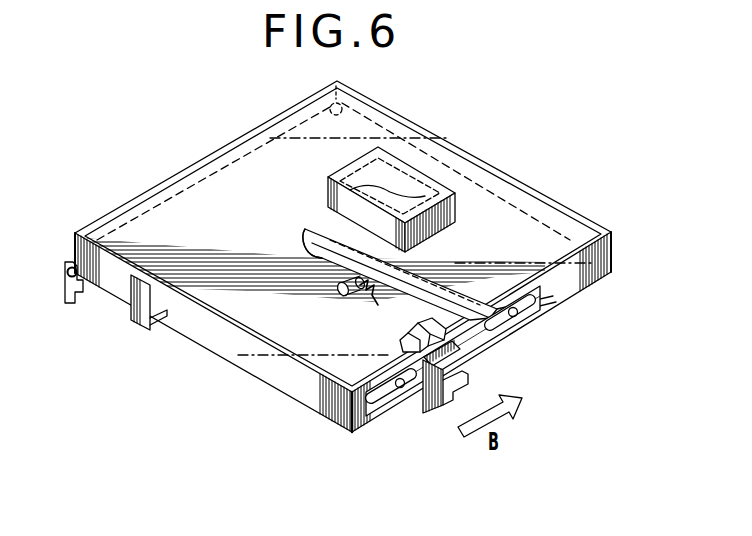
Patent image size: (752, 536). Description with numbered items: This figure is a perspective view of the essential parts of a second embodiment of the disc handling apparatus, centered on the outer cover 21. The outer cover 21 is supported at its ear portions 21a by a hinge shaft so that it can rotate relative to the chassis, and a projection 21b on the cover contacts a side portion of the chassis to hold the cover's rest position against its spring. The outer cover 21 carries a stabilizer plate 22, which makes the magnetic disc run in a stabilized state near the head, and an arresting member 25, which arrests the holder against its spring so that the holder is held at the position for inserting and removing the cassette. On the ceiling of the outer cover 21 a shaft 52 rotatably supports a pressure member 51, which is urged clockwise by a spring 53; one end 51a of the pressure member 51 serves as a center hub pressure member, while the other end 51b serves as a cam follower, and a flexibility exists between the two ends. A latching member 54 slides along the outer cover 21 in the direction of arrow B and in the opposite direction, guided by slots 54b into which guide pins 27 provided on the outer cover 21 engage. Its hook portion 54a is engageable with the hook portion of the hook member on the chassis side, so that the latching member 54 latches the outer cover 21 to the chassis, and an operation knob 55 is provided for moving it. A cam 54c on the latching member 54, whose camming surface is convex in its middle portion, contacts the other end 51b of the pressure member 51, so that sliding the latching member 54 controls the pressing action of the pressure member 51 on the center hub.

The outer cover 21 is at (508, 193).
The ear portions 21a is at (344, 103).
The projection 21b is at (70, 304).
The stabilizer plate 22 is at (415, 178).
The arresting member 25 is at (137, 322).
The guide pins 27 is at (396, 375).
The pressure member 51 is at (415, 278).
The one end of pressure member 51a is at (300, 243).
The other end of pressure member 51b is at (500, 340).
The shaft 52 is at (340, 290).
The spring 53 is at (374, 305).
The latching member 54 is at (478, 343).
The hook portion 54a is at (458, 400).
The slots 54b is at (505, 300).
The cam 54c is at (423, 322).
The operation knob 55 is at (462, 362).